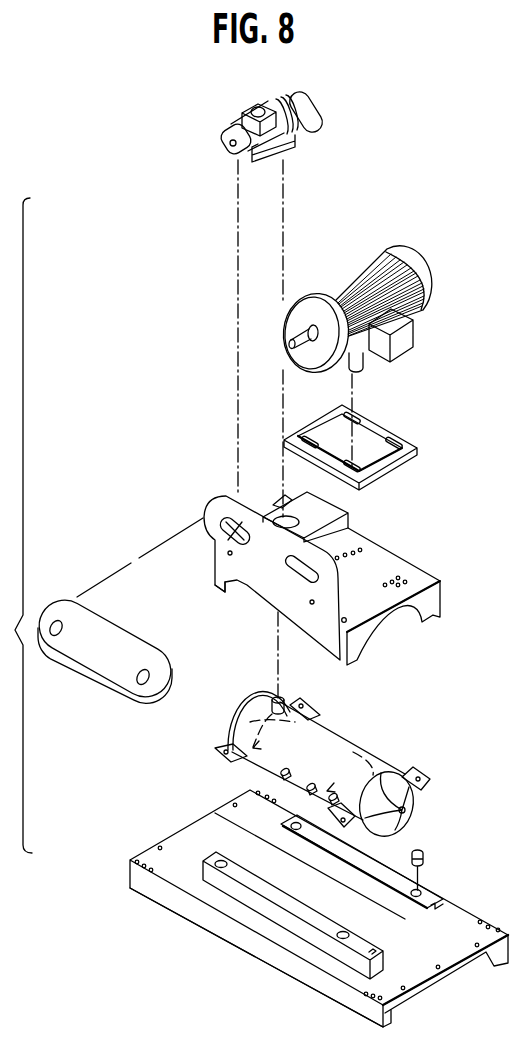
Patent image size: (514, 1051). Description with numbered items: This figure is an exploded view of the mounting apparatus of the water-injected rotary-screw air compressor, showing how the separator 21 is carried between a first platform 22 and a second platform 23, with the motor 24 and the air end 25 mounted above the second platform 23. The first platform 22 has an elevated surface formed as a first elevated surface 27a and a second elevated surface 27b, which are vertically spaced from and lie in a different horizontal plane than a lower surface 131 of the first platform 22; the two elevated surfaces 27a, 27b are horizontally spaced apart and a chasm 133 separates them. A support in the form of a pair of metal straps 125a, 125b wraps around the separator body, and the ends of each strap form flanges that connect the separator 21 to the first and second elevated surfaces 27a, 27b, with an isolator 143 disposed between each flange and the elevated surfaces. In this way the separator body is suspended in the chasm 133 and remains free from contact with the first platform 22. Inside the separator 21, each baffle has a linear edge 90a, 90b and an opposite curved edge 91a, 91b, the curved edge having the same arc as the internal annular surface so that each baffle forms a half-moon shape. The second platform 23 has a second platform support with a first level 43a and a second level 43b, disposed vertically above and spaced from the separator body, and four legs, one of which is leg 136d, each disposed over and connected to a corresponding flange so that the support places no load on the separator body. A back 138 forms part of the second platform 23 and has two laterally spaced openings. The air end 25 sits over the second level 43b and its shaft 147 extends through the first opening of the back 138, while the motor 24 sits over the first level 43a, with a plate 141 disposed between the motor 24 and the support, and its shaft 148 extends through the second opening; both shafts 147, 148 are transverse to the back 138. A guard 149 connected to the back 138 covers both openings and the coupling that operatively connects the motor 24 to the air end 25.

The separator 21 is at (274, 763).
The first platform 22 is at (312, 911).
The second platform 23 is at (314, 602).
The motor 24 is at (428, 270).
The air end 25 is at (322, 116).
The first elevated surface 27a is at (268, 900).
The second elevated surface 27b is at (285, 828).
The first level 43a is at (370, 560).
The second level 43b is at (327, 512).
The linear edge 90a is at (316, 724).
The linear edge 90b is at (373, 767).
The curved edge 91a is at (272, 713).
The curved edge 91b is at (330, 788).
The metal strap 125a is at (220, 750).
The metal strap 125b is at (432, 776).
The lower surface 131 is at (435, 957).
The chasm 133 is at (379, 921).
The leg 136d is at (220, 590).
The back 138 is at (312, 586).
The plate 141 is at (390, 430).
The isolator 143 is at (425, 852).
The shaft 147 is at (231, 141).
The shaft 148 is at (284, 305).
The guard 149 is at (50, 627).